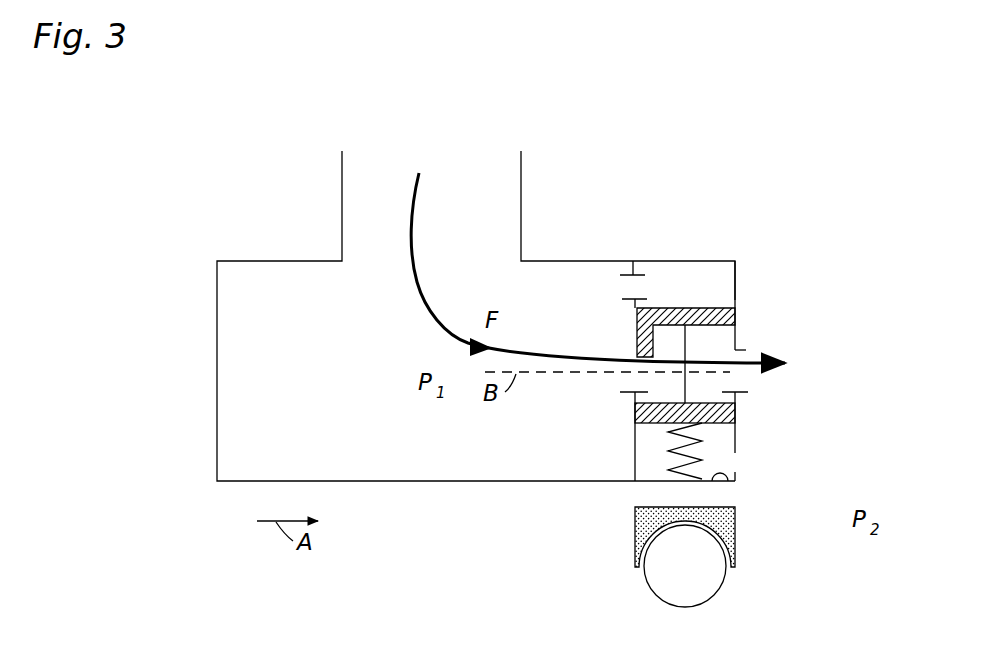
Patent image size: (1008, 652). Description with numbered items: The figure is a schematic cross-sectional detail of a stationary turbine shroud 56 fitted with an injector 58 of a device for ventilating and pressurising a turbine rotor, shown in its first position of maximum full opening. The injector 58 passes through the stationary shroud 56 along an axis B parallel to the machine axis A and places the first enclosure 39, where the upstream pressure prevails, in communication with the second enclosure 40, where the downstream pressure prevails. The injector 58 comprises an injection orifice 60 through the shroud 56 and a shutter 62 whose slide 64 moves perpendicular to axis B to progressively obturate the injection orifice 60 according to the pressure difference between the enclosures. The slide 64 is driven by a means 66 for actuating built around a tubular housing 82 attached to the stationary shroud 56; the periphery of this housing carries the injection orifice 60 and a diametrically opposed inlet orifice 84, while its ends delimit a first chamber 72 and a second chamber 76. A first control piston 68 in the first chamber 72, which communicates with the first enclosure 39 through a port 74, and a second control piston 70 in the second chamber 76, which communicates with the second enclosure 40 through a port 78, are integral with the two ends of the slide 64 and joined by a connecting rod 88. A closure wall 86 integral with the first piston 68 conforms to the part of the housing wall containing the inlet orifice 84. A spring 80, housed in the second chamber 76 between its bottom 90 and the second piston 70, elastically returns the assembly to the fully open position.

The first enclosure 39 is at (476, 316).
The second enclosure 40 is at (820, 455).
The stationary shroud 56 is at (736, 447).
The injector 58 is at (731, 383).
The injection orifice 60 is at (748, 392).
The shutter 62 is at (708, 337).
The slide 64 is at (736, 350).
The means for actuating the slide 66 is at (720, 299).
The first control piston 68 is at (731, 314).
The second control piston 70 is at (736, 413).
The first chamber 72 is at (681, 278).
The port 74 is at (623, 275).
The second chamber 76 is at (650, 458).
The port 78 is at (737, 473).
The spring 80 is at (666, 478).
The tubular housing 82 is at (634, 440).
The inlet orifice 84 is at (634, 395).
The closure wall 86 is at (645, 344).
The connecting rod 88 is at (667, 331).
The bottom 90 is at (736, 483).